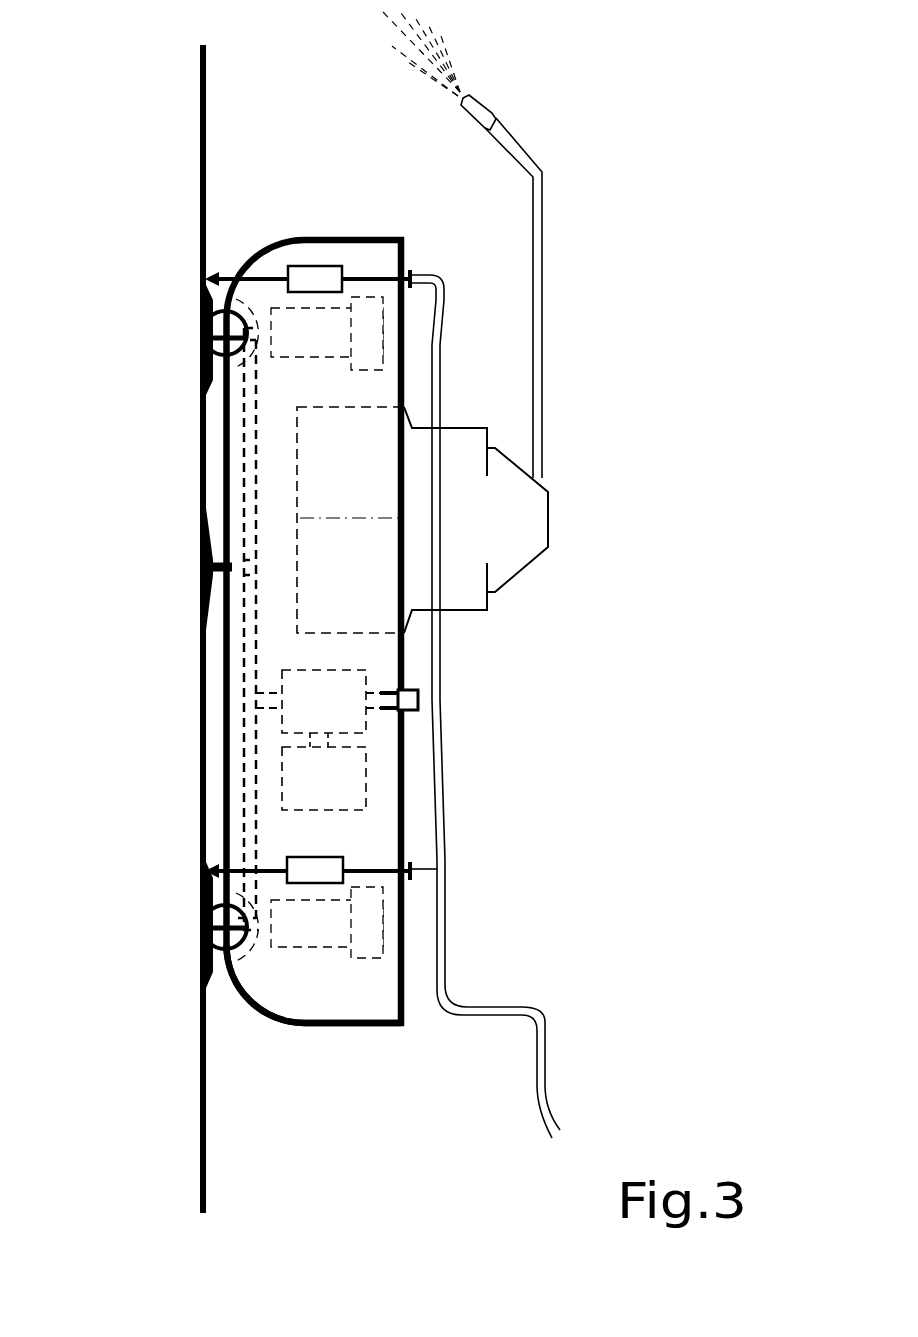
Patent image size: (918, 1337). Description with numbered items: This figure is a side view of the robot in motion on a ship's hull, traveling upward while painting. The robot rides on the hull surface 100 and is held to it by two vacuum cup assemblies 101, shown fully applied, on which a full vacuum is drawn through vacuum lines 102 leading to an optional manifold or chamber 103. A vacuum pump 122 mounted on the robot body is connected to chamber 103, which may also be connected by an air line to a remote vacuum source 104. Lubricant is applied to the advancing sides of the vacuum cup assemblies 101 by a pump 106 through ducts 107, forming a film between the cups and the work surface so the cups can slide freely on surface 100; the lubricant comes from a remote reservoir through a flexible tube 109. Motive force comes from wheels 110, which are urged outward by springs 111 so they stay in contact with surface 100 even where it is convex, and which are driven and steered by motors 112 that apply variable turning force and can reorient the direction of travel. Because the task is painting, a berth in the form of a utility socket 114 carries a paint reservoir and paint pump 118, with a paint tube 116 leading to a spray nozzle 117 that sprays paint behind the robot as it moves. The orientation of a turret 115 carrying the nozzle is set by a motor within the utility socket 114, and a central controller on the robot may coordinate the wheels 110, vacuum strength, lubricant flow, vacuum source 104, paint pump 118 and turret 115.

The hull surface 100 is at (203, 1083).
The vacuum cup assemblies 101 is at (198, 368).
The vacuum lines 102 is at (245, 475).
The manifold or chamber 103 is at (354, 724).
The vacuum source 104 is at (418, 700).
The pump 106 is at (312, 266).
The ducts 107 is at (228, 285).
The flexible tube 109 is at (498, 1007).
The wheels 110 is at (262, 953).
The springs 111 is at (328, 947).
The motors 112 is at (372, 958).
The utility socket 114 is at (297, 555).
The turret 115 is at (463, 497).
The paint tube 116 is at (545, 287).
The spray nozzle 117 is at (470, 99).
The paint pump 118 is at (352, 472).
The vacuum pump 122 is at (354, 801).